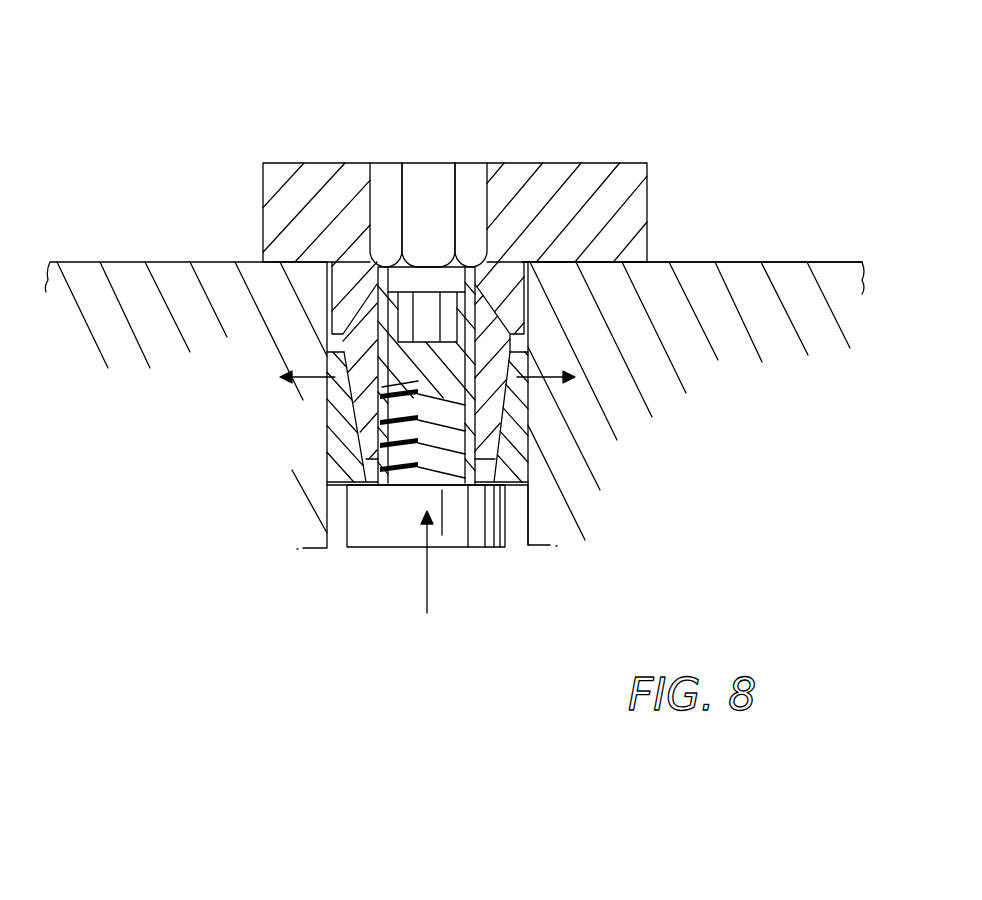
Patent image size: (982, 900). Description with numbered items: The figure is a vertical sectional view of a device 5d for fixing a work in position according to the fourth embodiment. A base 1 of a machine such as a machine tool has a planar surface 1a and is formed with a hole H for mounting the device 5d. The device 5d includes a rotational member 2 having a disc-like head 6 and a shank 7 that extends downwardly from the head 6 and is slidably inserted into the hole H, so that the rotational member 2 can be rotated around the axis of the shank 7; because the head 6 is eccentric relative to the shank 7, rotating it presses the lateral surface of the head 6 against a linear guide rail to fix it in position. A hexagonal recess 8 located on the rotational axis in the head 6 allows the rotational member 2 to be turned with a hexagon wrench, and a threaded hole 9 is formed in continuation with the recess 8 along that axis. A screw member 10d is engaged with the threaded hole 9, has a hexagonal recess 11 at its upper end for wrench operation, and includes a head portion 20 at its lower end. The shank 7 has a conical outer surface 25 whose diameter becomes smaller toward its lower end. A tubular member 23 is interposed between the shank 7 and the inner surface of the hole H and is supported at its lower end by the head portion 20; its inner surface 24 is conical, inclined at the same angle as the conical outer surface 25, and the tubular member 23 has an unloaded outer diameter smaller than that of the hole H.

The base 1 is at (177, 297).
The planar surface 1a is at (726, 260).
The rotational member 2 is at (550, 236).
The device 5d is at (550, 220).
The disc-like head 6 is at (623, 176).
The shank 7 is at (510, 322).
The hexagonal recess 8 is at (470, 187).
The threaded hole 9 is at (375, 405).
The screw member 10d is at (527, 427).
The hexagonal recess 11 is at (403, 307).
The head portion 20 is at (396, 532).
The tubular member 23 is at (327, 462).
The inner surface 24 is at (325, 505).
The conical outer surface 25 is at (527, 408).
The hole H is at (530, 522).